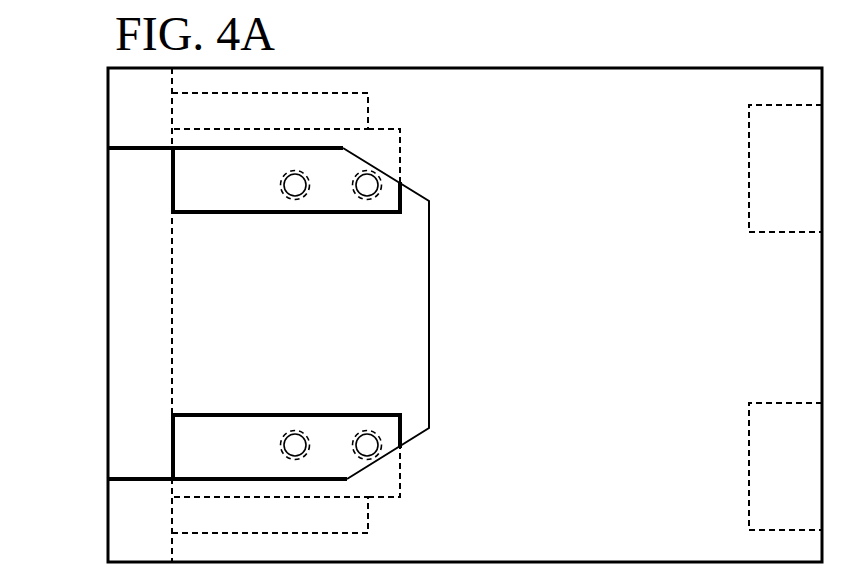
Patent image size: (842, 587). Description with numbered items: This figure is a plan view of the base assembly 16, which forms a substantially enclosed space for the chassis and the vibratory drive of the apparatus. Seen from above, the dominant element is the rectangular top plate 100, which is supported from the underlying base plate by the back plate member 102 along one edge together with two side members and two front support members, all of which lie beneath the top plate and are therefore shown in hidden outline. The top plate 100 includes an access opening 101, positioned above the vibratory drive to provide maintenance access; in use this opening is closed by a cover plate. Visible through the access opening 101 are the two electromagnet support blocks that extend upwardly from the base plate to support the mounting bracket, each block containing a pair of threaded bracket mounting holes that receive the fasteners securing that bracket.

The base assembly 16 is at (680, 58).
The top plate 100 is at (584, 306).
The access opening 101 is at (430, 280).
The back plate member 102 is at (112, 243).